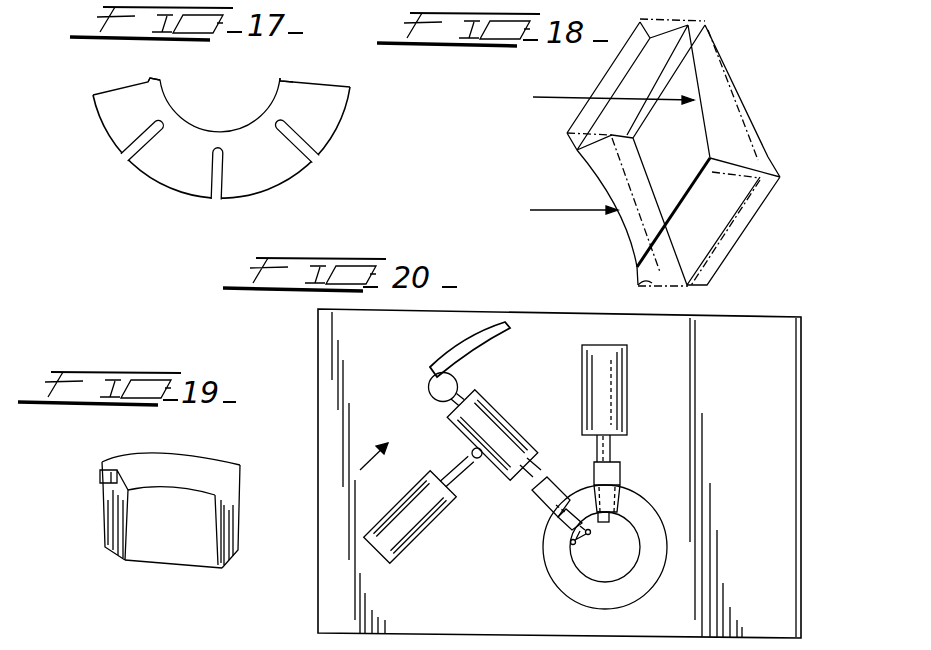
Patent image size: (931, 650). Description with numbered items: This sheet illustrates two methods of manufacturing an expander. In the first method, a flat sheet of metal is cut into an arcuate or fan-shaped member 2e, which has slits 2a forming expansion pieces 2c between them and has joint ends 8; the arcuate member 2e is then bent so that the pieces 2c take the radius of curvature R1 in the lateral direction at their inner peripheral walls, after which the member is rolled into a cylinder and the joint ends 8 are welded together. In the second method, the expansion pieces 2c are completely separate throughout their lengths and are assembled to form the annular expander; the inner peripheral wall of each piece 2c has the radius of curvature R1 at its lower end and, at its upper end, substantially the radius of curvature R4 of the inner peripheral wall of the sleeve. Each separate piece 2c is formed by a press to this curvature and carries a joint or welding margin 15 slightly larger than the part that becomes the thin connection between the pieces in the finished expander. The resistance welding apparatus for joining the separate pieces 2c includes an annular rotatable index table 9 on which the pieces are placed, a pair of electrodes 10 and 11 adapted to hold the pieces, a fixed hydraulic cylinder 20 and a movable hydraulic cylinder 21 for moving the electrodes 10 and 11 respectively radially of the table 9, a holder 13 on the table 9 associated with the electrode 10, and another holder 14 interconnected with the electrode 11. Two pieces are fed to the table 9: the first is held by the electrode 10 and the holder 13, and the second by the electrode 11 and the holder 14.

In FIG. 17, the arcuate member 2e is at (125, 87).
In FIG. 17, the joint ends 8 is at (152, 80).
In FIG. 17, the slits 2a is at (128, 152).
In FIG. 17, the expansion pieces 2c is at (177, 178).
In FIG. 18, the expansion pieces 2c is at (637, 285).
In FIG. 19, the expansion pieces 2c is at (187, 537).
In FIG. 20, the expansion pieces 2c is at (570, 497).
In FIG. 18, the radius of curvature R1 is at (613, 86).
In FIG. 18, the radius of curvature R4 is at (574, 197).
In FIG. 19, the joint or welding margin 15 is at (100, 476).
In FIG. 20, the fixed hydraulic cylinder 20 is at (627, 375).
In FIG. 20, the movable hydraulic cylinder 21 is at (497, 410).
In FIG. 20, the electrode 10 is at (612, 473).
In FIG. 20, the holder 13 is at (609, 518).
In FIG. 20, the electrode 11 is at (543, 507).
In FIG. 20, the holder 14 is at (578, 545).
In FIG. 20, the index table 9 is at (603, 597).